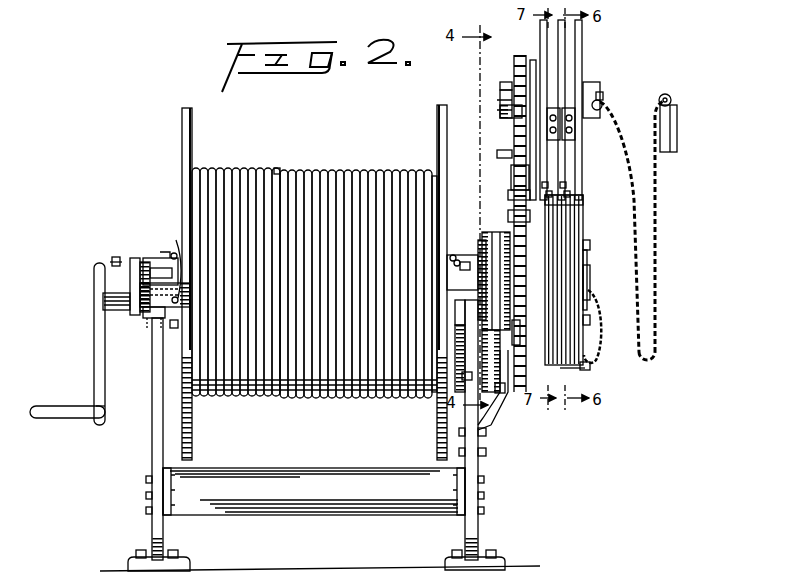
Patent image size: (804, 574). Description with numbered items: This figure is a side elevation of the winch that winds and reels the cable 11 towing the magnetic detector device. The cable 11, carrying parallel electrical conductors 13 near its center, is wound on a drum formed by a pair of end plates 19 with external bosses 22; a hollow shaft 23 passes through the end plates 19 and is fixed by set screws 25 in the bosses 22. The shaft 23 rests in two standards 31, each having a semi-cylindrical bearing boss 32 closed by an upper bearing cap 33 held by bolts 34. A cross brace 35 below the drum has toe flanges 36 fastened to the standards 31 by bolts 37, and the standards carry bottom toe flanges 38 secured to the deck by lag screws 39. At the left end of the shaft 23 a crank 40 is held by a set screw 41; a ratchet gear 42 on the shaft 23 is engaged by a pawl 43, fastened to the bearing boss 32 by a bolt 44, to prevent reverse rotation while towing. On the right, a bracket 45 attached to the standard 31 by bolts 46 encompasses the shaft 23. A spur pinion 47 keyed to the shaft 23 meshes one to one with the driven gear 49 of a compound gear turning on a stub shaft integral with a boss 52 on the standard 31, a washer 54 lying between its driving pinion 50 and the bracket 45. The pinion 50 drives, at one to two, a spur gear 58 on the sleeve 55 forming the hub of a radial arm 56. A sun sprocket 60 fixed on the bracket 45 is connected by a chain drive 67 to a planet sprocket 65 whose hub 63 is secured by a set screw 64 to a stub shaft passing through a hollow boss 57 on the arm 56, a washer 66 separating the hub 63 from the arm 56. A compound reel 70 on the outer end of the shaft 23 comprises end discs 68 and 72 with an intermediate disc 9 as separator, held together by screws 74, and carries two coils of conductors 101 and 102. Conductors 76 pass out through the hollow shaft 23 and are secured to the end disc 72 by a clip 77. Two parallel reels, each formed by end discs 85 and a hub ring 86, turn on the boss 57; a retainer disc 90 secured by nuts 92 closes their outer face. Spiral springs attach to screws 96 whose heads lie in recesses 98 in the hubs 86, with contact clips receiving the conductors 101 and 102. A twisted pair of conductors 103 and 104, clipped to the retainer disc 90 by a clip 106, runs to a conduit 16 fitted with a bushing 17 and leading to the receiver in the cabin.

The intermediate disc 9 is at (583, 236).
The cable 11 is at (314, 174).
The electrical conductors 13 is at (276, 168).
The conduit 16 is at (678, 125).
The bushing 17 is at (671, 100).
The end plates 19 is at (183, 132).
The external bosses 22 is at (174, 328).
The hollow shaft 23 is at (590, 275).
The set screws 25 is at (174, 253).
The standards 31 is at (152, 413).
The bearing boss 32 is at (152, 320).
The upper bearing caps 33 is at (157, 258).
The bolts 34 is at (150, 262).
The cross brace 35 is at (322, 468).
The toe flanges 36 is at (170, 502).
The bolts 37 is at (146, 510).
The toe flanges 38 is at (188, 560).
The bolts or lag screws 39 is at (170, 550).
The crank 40 is at (97, 425).
The set screw 41 is at (114, 257).
The ratchet gear 42 is at (133, 258).
The pawl 43 is at (128, 305).
The bolt 44 is at (143, 312).
The bracket 45 is at (498, 400).
The bolts 46 is at (486, 452).
The spur pinion 47 is at (510, 214).
The driven gear 49 is at (482, 388).
The driving pinion 50 is at (505, 388).
The boss 52 is at (482, 353).
The washer 54 is at (505, 350).
The sleeve 55 is at (520, 332).
The radial arm 56 is at (510, 156).
The hollow boss 57 is at (500, 100).
The spur gear 58 is at (508, 195).
The sun sprocket 60 is at (500, 345).
The hub 63 is at (505, 118).
The set screw 64 is at (505, 83).
The planet sprocket 65 is at (514, 62).
The washer 66 is at (525, 78).
The chain drive 67 is at (511, 176).
The innermost end disc 68 is at (562, 205).
The compound reel 70 is at (575, 372).
The outermost end disc 72 is at (587, 262).
The screws 74 is at (590, 245).
The conductors 76 is at (600, 345).
The clip 77 is at (590, 366).
The end discs 85 is at (540, 24).
The intermediate ring 86 is at (565, 62).
The retainer disc 90 is at (590, 81).
The nuts 92 is at (603, 92).
The screws 96 is at (575, 122).
The recesses 98 is at (575, 135).
The conductor 101 is at (566, 186).
The conductor 102 is at (570, 198).
The conductor 103 is at (642, 276).
The conductor 104 is at (656, 295).
The clip 106 is at (601, 103).